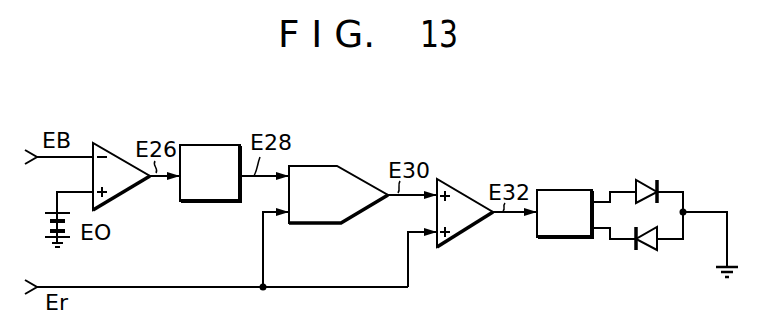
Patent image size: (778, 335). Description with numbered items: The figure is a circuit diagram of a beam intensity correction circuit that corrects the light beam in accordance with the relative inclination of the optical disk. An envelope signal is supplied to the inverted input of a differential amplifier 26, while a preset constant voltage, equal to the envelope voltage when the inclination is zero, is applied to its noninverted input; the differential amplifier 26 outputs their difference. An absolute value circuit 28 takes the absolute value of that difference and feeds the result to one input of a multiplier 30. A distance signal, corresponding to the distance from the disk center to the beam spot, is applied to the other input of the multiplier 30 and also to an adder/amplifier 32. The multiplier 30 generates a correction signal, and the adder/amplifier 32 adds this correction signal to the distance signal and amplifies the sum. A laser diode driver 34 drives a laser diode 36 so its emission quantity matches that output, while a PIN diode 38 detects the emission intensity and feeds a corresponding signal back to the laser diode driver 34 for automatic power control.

The differential amplifier 26 is at (120, 162).
The absolute value circuit 28 is at (210, 157).
The multiplier 30 is at (336, 180).
The adder/amplifier 32 is at (463, 203).
The laser diode driver (LDD) 34 is at (560, 190).
The laser diode (LD) 36 is at (641, 180).
The PIN diode 38 is at (648, 251).